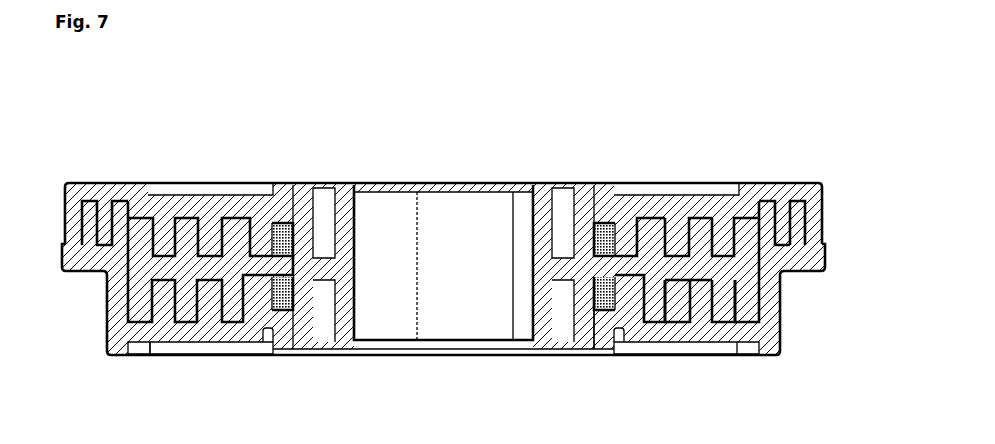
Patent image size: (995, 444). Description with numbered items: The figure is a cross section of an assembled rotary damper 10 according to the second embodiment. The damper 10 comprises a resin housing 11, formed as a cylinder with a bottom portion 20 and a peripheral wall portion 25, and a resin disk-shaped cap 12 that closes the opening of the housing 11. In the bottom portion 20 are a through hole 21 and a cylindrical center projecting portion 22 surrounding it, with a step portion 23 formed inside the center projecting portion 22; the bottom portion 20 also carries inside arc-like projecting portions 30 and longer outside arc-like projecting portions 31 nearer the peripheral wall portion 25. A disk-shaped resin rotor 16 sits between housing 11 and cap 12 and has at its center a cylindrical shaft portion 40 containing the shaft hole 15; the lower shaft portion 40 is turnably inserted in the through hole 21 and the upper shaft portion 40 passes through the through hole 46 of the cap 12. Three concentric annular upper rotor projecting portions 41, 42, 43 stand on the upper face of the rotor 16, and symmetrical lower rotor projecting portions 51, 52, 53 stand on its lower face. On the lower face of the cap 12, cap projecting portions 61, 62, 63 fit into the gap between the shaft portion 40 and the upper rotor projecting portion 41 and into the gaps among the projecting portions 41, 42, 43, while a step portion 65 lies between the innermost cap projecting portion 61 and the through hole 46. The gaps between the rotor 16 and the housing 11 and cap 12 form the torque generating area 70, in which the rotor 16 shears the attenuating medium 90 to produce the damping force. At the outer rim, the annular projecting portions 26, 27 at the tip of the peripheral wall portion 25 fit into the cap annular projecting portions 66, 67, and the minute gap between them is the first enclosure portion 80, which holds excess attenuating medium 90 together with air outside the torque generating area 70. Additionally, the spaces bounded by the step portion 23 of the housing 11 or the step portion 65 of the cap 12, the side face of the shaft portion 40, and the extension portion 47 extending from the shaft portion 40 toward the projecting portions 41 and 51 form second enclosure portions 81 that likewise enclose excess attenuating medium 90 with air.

The damper 10 is at (88, 128).
The housing 11 is at (61, 265).
The cap 12 is at (67, 183).
The shaft hole 15 is at (355, 196).
The rotor 16 is at (136, 214).
The bottom portion 20 is at (286, 356).
The through hole 21 is at (300, 357).
The center projecting portion 22 is at (282, 268).
The step portion 23 is at (268, 338).
The peripheral wall portion 25 is at (107, 331).
The annular projecting portion 26 is at (772, 203).
The annular projecting portion 27 is at (798, 205).
The inside arc-like projecting portion 30 is at (191, 338).
The outside arc-like projecting portion 31 is at (150, 330).
The shaft portion 40 is at (603, 192).
The upper rotor projecting portion 41 is at (650, 216).
The upper rotor projecting portion 42 is at (698, 216).
The upper rotor projecting portion 43 is at (744, 216).
The through hole 46 is at (303, 238).
The extension portion 47 is at (573, 337).
The lower rotor projecting portion 51 is at (655, 345).
The lower rotor projecting portion 52 is at (710, 345).
The lower rotor projecting portion 53 is at (760, 347).
The cap projecting portion 61 is at (640, 328).
The cap projecting portion 62 is at (673, 328).
The cap projecting portion 63 is at (720, 323).
The step portion 65 is at (283, 222).
The cap annular projecting portion 66 is at (790, 272).
The cap annular projecting portion 67 is at (827, 268).
The torque generating area 70 is at (238, 216).
The enclosure portion 80 is at (92, 200).
The second enclosure portion 81 is at (305, 233).
The attenuating medium 90 is at (600, 236).